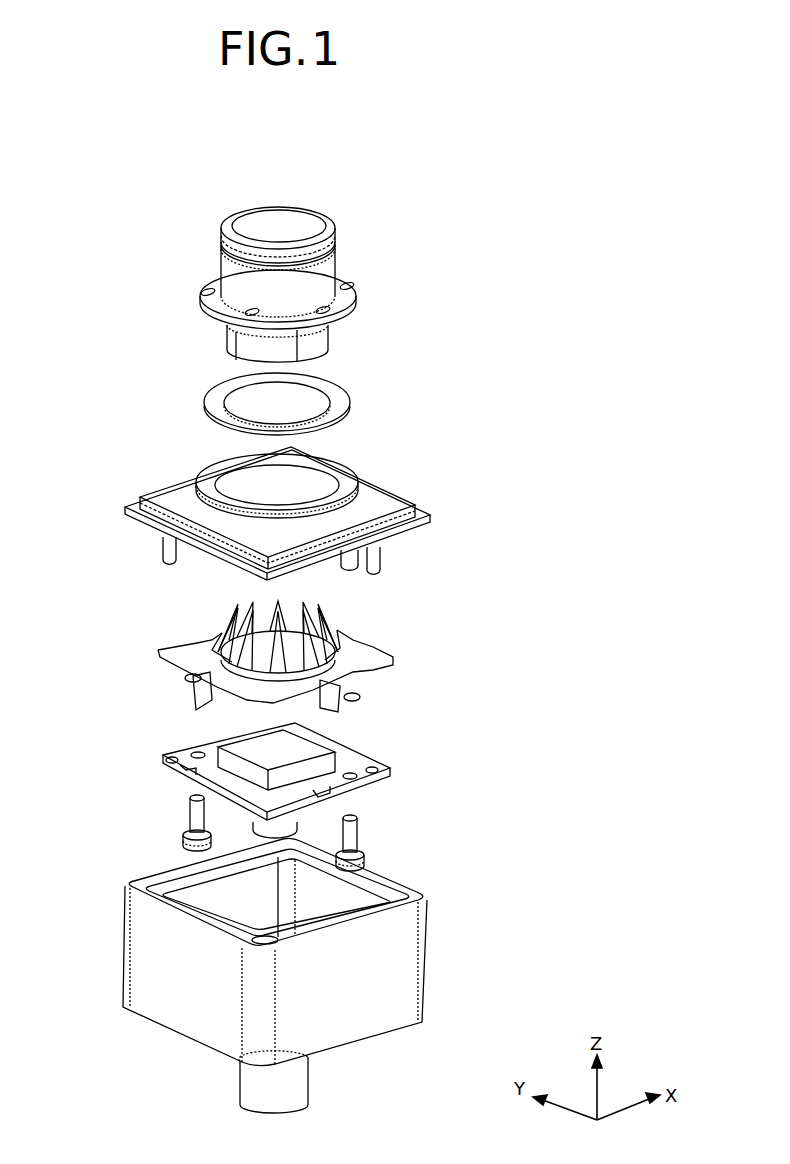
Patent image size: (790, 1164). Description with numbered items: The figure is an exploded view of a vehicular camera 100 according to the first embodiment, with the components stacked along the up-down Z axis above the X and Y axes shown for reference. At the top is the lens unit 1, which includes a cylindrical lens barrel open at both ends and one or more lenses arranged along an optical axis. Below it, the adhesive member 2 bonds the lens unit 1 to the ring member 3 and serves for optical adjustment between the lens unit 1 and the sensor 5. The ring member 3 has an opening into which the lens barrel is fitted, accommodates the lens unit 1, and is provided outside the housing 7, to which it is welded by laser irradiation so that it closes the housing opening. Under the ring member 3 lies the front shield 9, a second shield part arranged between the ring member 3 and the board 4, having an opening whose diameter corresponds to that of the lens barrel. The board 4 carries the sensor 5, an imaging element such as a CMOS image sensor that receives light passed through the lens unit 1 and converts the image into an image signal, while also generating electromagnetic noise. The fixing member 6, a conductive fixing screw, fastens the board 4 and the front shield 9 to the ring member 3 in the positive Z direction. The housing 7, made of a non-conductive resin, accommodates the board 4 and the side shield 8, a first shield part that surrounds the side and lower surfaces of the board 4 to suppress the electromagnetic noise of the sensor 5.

The vehicular camera 100 is at (388, 190).
The lens unit 1 is at (332, 262).
The adhesive member 2 is at (333, 392).
The ring member 3 is at (373, 500).
The front shield 9 is at (377, 658).
The board 4 is at (353, 762).
The sensor 5 is at (263, 750).
The fixing member 6 is at (193, 817).
The housing 7 is at (352, 1002).
The side shield 8 is at (226, 893).